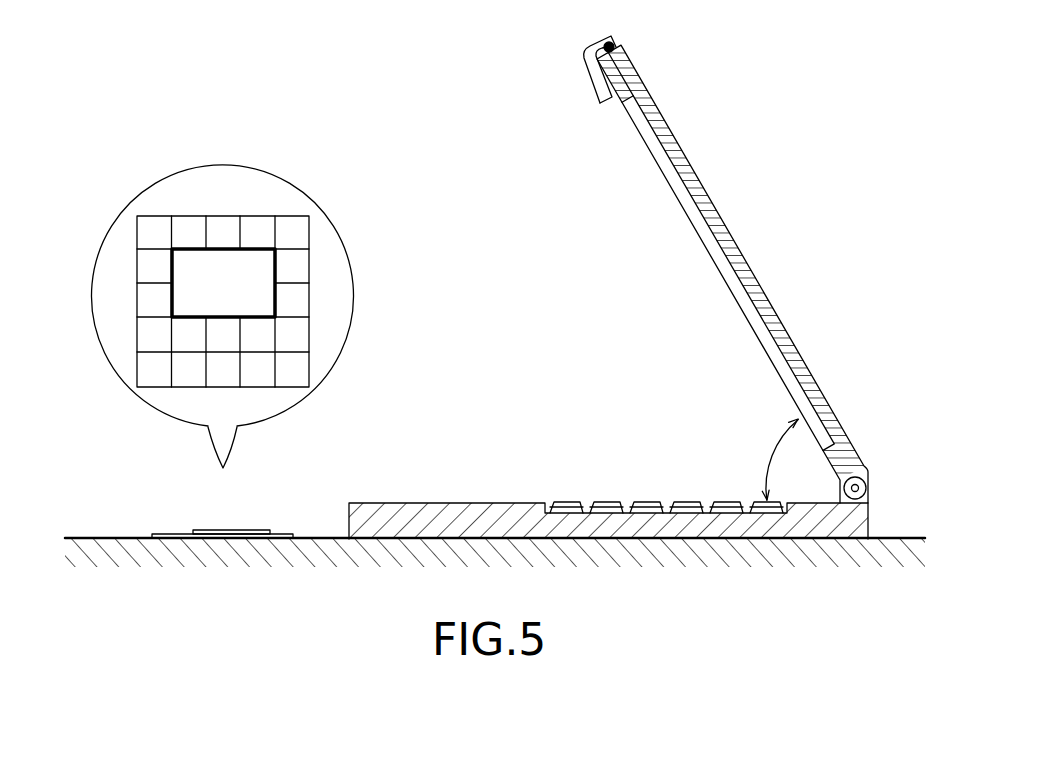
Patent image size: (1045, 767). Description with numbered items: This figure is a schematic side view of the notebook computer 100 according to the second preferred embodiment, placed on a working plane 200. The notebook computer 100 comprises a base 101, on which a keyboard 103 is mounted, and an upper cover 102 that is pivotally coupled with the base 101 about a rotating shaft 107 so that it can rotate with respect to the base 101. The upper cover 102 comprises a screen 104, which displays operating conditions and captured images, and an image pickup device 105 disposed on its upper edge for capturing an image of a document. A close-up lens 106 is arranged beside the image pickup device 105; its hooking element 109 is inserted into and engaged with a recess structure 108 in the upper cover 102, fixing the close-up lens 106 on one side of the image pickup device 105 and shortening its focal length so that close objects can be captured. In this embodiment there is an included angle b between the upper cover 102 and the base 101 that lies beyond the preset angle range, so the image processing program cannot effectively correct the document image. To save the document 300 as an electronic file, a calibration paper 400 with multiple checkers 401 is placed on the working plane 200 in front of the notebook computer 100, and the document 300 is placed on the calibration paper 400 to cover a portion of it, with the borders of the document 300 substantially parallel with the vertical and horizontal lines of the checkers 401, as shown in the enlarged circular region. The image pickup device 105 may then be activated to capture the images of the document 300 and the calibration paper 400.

The notebook computer 100 is at (427, 127).
The base 101 is at (870, 522).
The upper cover 102 is at (723, 253).
The keyboard 103 is at (603, 500).
The screen 104 is at (702, 233).
The image pickup device 105 is at (632, 77).
The close-up lens 106 is at (593, 88).
The rotating shaft 107 is at (864, 477).
The recess structure 108 is at (615, 42).
The hooking element 109 is at (558, 83).
The working plane 200 is at (126, 537).
The document 300 is at (253, 530).
The calibration paper 400 is at (163, 533).
The checkers 401 is at (190, 229).